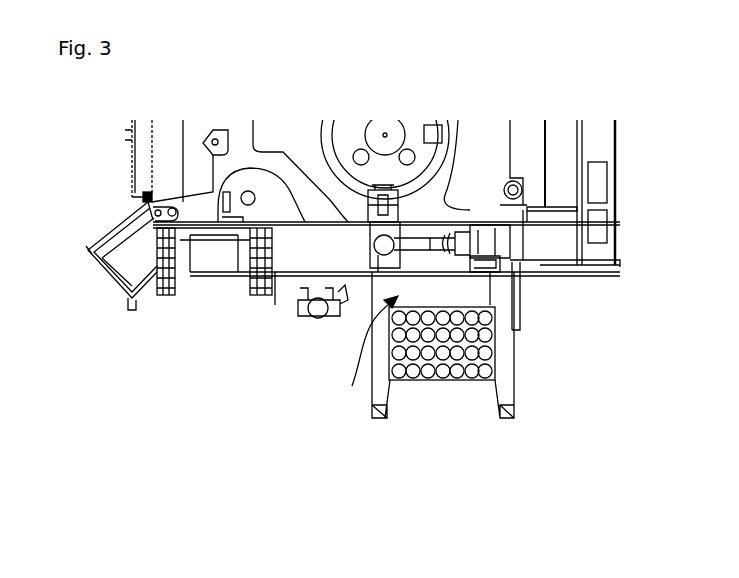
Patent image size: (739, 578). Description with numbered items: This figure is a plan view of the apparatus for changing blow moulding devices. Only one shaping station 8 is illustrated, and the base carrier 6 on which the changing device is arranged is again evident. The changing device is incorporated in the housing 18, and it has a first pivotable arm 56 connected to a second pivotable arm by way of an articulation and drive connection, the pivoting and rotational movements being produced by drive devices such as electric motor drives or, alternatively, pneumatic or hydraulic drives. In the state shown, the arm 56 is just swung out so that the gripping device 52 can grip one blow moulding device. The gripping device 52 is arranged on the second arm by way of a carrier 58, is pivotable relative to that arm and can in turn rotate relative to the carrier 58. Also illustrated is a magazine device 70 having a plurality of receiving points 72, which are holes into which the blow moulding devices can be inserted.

The base carrier 6 is at (478, 157).
The shaping station 8 is at (372, 205).
The housing 18 is at (360, 352).
The gripping device 52 is at (392, 247).
The first pivotable arm 56 is at (477, 265).
The carrier 58 is at (478, 233).
The magazine device 70 is at (482, 345).
The receiving points 72 is at (468, 373).